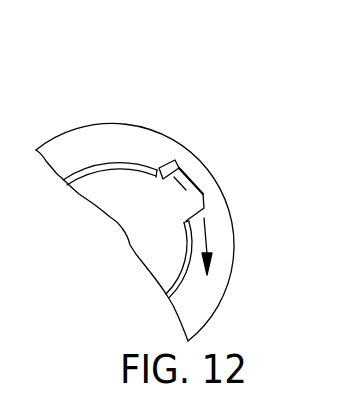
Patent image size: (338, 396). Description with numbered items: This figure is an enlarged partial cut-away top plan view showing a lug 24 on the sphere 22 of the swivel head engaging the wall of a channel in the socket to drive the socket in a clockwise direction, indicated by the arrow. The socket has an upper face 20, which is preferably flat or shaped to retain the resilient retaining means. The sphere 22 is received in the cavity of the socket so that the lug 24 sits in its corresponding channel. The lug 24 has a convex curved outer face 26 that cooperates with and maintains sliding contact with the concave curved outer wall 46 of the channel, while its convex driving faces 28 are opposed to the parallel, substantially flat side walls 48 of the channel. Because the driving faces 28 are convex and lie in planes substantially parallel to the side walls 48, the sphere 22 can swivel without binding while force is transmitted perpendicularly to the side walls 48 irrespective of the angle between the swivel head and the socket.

The upper face 20 is at (222, 285).
The sphere 22 is at (130, 218).
The lug 24 is at (182, 188).
The outer face 26 is at (206, 194).
The driving face 28 is at (157, 173).
The outer wall 46 is at (190, 166).
The side wall 48 is at (174, 160).